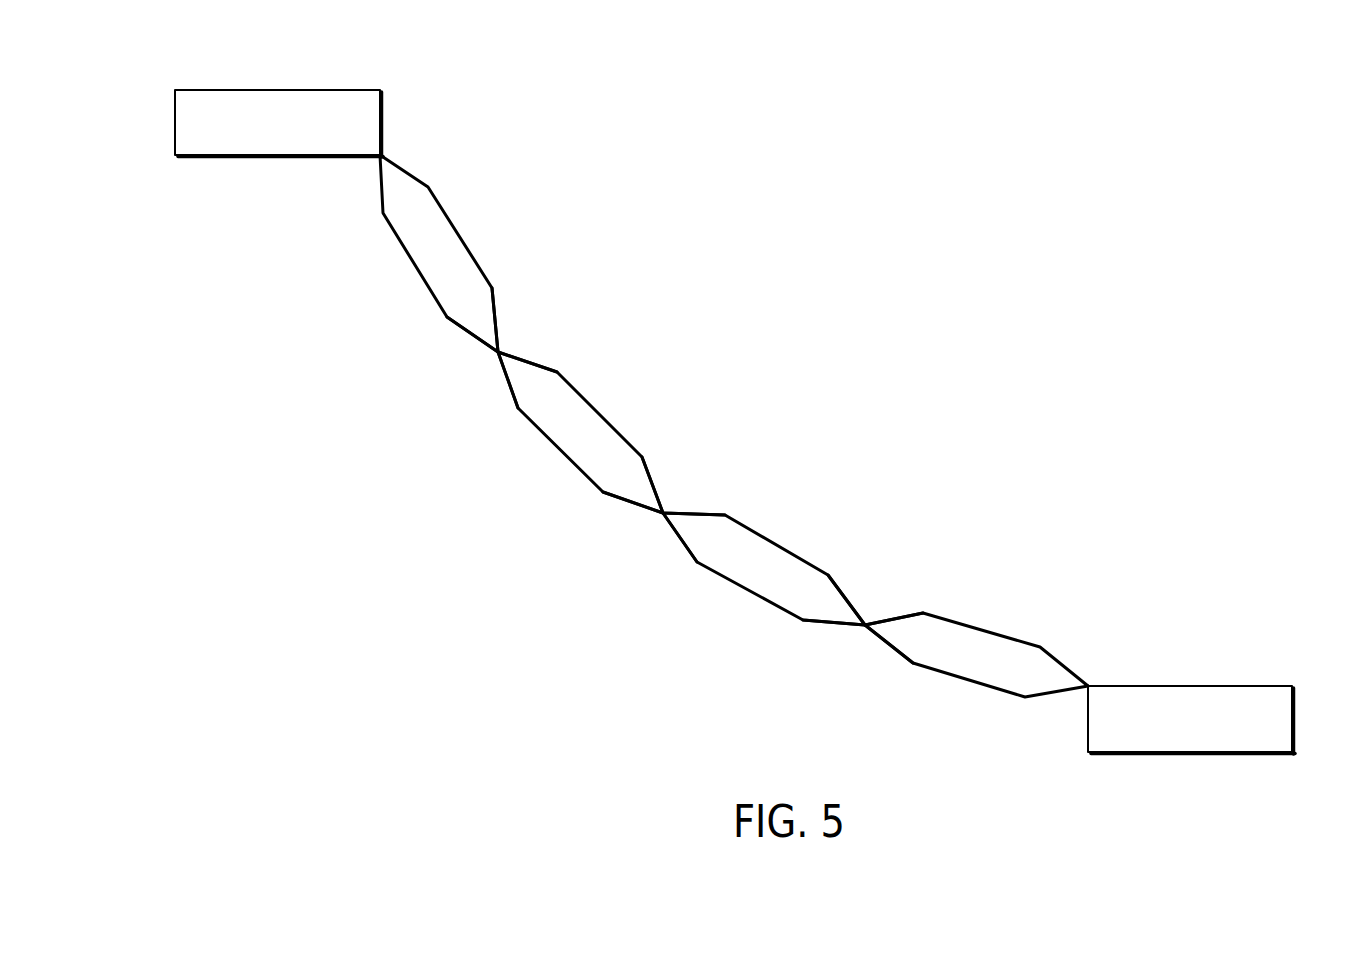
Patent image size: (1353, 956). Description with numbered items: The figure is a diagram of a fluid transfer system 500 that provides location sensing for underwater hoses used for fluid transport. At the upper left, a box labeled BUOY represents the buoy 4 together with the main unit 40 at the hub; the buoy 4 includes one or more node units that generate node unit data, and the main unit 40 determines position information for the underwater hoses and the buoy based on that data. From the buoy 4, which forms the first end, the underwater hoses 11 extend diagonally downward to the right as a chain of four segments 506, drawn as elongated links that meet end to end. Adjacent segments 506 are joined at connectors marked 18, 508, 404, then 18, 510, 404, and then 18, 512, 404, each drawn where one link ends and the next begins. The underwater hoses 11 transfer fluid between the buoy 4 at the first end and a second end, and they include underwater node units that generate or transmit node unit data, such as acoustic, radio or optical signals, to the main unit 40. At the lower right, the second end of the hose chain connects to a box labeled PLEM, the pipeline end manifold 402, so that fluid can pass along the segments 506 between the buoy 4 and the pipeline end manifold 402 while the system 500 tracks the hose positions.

The buoy 4 is at (279, 111).
The main unit 40 is at (277, 88).
The underwater hoses 11 is at (409, 557).
The fluid transfer system 500 is at (543, 705).
The segments 506 is at (1003, 612).
The connector 18 is at (437, 348).
The first connector joint 508 is at (437, 348).
The second connector joint 510 is at (663, 513).
The third connector joint 512 is at (865, 625).
The connector 404 is at (498, 352).
The PLEM 402 is at (1193, 753).